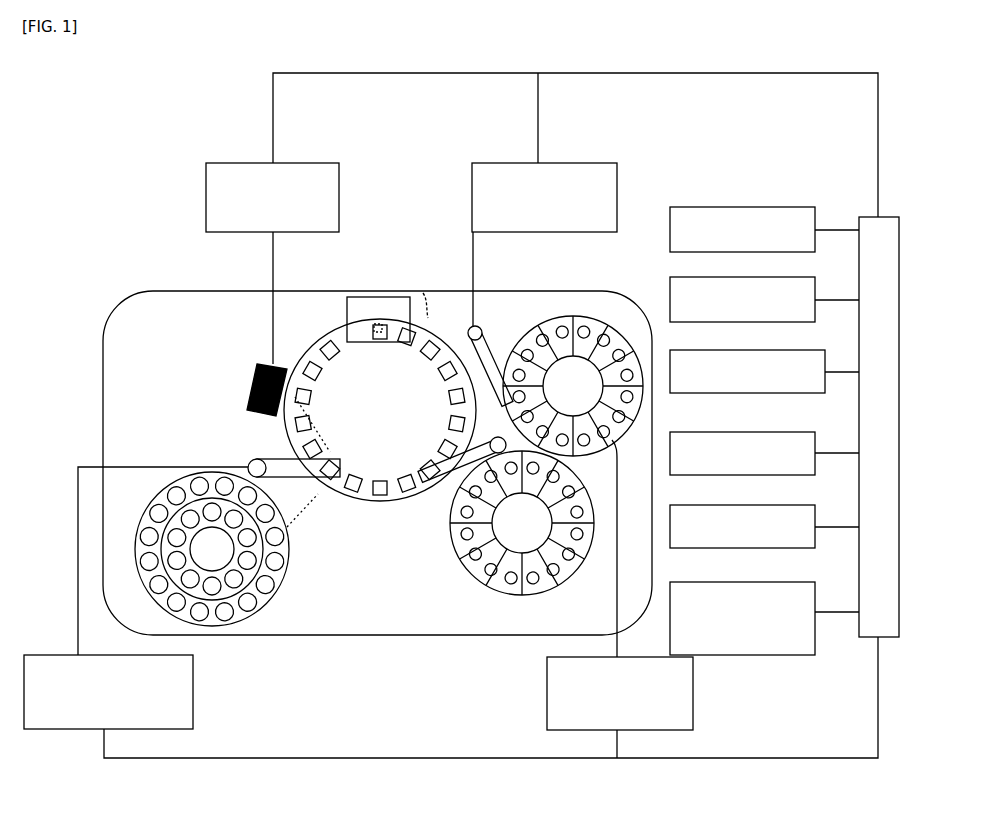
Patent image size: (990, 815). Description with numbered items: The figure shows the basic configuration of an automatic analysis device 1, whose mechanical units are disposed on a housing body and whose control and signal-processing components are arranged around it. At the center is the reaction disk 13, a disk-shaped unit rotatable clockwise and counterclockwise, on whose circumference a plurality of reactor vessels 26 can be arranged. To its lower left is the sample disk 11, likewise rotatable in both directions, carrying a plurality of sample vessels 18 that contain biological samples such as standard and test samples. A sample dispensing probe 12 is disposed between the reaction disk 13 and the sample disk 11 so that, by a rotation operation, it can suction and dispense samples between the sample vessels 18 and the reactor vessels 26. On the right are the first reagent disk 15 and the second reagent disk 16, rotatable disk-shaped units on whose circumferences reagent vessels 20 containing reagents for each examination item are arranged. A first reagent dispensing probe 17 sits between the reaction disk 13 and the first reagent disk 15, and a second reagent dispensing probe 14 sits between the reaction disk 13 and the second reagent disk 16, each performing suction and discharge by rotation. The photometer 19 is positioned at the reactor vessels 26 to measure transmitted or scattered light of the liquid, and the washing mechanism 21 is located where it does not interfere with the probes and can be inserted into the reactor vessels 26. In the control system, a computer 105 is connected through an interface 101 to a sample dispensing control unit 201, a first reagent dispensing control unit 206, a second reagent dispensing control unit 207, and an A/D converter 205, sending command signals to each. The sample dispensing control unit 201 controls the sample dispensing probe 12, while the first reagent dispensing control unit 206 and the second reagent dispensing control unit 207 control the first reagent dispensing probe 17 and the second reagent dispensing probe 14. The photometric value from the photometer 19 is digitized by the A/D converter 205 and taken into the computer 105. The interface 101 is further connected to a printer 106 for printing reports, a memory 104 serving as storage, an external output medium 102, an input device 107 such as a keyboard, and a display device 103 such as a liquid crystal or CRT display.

The automatic analysis device 1 is at (103, 442).
The sample disk 11 is at (168, 476).
The sample dispensing probe 12 is at (313, 477).
The reaction disk 13 is at (360, 501).
The second reagent dispensing probe 14 is at (440, 483).
The first reagent disk 15 is at (615, 318).
The second reagent disk 16 is at (497, 595).
The first reagent dispensing probe 17 is at (512, 306).
The sample vessels 18 is at (242, 466).
The photometer 19 is at (256, 388).
The reagent vessels 20 is at (617, 462).
The washing mechanism 21 is at (371, 296).
The reactor vessels 26 is at (446, 300).
The interface 101 is at (872, 637).
The external output medium 102 is at (765, 582).
The display device 103 is at (765, 505).
The memory 104 is at (765, 432).
The computer 105 is at (760, 350).
The printer 106 is at (750, 277).
The input device 107 is at (750, 207).
The sample dispensing control unit 201 is at (193, 688).
The A/D converter 205 is at (316, 163).
The reagent dispensing control unit (1) 206 is at (606, 163).
The reagent dispensing control unit (2) 207 is at (547, 680).